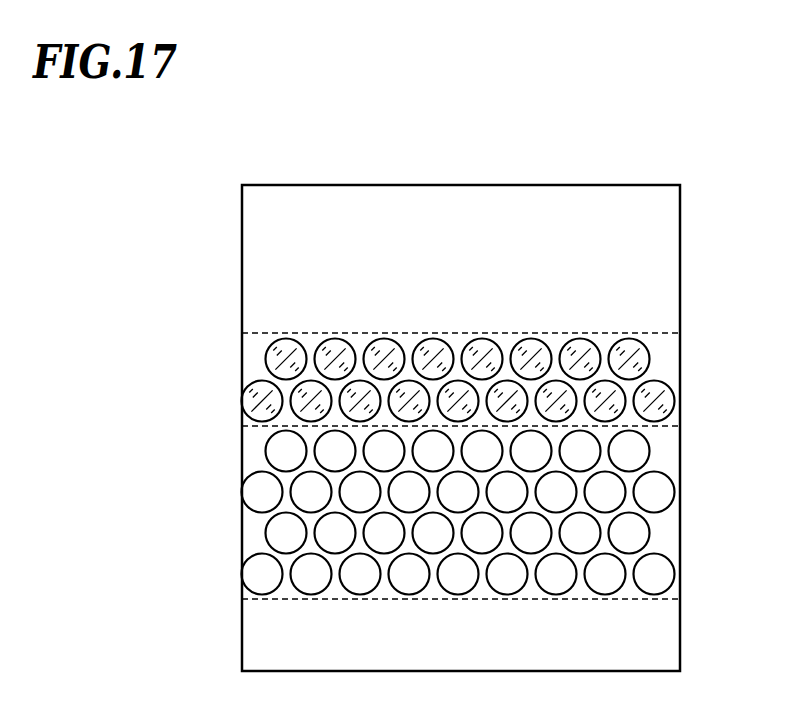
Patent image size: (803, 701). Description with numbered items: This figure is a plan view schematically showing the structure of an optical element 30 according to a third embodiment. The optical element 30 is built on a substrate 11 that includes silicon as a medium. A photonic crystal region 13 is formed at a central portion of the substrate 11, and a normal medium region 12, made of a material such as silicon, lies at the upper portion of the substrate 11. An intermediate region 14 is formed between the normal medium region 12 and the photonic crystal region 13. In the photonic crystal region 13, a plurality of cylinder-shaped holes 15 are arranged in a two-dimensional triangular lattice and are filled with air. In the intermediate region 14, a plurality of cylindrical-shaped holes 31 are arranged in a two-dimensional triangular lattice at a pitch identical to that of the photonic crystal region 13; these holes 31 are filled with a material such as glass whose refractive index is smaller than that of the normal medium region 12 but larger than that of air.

The optical element 30 is at (470, 128).
The substrate 11 is at (661, 231).
The normal medium region 12 is at (241, 232).
The photonic crystal region 13 is at (246, 537).
The intermediate region 14 is at (241, 384).
The holes 15 is at (664, 576).
The holes 31 is at (641, 364).